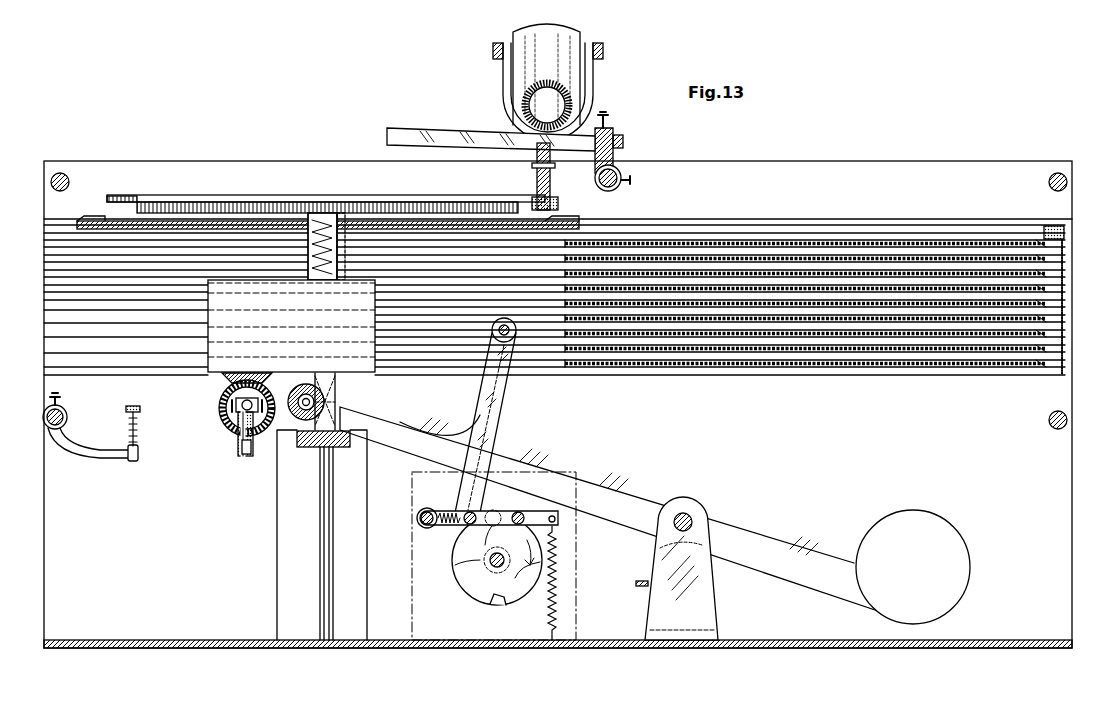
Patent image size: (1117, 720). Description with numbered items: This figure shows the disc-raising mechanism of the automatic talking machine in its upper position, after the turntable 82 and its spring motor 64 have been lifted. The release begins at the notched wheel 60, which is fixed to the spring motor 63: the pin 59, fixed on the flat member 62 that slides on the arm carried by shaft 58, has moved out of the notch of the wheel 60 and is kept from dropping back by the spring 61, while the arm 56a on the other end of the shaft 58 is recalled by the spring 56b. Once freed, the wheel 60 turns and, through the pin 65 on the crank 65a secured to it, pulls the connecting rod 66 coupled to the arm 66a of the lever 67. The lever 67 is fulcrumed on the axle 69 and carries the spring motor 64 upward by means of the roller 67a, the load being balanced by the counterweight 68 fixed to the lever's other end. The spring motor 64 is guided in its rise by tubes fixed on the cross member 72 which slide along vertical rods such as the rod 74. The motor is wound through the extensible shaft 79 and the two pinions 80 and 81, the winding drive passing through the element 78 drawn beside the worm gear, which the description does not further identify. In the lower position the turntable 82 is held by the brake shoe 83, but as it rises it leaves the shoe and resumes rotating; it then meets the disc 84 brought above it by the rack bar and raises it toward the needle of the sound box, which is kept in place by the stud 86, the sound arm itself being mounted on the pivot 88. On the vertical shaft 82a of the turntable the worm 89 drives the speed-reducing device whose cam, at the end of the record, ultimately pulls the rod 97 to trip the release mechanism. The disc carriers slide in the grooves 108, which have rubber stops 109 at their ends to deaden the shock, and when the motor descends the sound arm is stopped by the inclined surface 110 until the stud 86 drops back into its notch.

The arm 56a is at (560, 521).
The spring 56b is at (556, 582).
The shaft 58 is at (420, 518).
The pin 59 is at (495, 510).
The wheel 60 is at (483, 590).
The spring 61 is at (448, 512).
The flat member 62 is at (522, 508).
The spring motor 63 is at (420, 610).
The spring motor 64 is at (210, 372).
The pin 65 is at (470, 523).
The crank 65a is at (465, 545).
The connecting rod 66 is at (500, 415).
The arm 66a is at (475, 440).
The lever 67 is at (640, 500).
The roller 67a is at (303, 402).
The counterweight 68 is at (950, 550).
The axle 69 is at (692, 520).
The cross member 72 is at (306, 448).
The vertical rod 74 is at (322, 590).
The worm 78 is at (243, 435).
The extensible shaft 79 is at (252, 450).
The pinion 80 is at (232, 420).
The pinion 81 is at (225, 382).
The turntable 82 is at (140, 208).
The vertical shaft 82a is at (312, 270).
The brake shoe 83 is at (133, 408).
The disc 84 is at (137, 197).
The stud 86 is at (590, 125).
The pivot 88 is at (540, 160).
The worm 89 is at (342, 270).
The rod 97 is at (640, 582).
The grooves 108 is at (50, 297).
The rubber stops 109 is at (1064, 274).
The inclined surface 110 is at (416, 135).